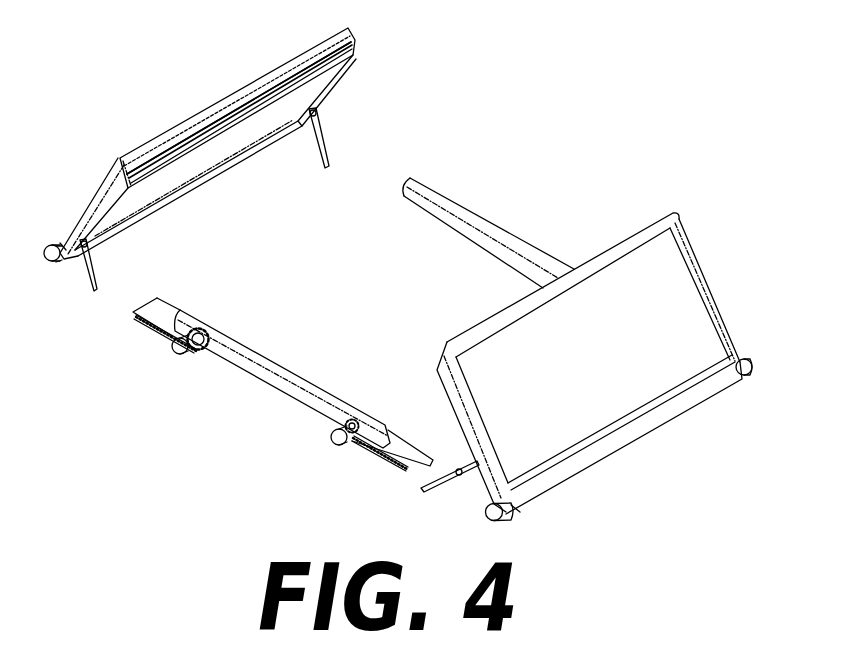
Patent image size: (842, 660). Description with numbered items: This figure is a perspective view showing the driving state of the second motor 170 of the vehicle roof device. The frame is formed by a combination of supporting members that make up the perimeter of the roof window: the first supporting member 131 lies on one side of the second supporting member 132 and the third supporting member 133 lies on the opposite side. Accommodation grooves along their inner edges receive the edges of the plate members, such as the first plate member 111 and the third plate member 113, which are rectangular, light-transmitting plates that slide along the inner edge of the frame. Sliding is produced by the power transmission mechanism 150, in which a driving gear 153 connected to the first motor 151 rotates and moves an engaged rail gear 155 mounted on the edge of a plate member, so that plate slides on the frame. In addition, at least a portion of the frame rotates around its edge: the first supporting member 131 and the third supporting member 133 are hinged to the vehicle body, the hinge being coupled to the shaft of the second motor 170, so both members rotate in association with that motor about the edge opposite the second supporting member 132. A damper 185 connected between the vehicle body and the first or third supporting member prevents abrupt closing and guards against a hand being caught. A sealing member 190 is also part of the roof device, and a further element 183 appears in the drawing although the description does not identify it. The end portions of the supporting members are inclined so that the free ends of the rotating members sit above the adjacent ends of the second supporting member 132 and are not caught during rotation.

The first plate member 111 is at (352, 50).
The third plate member 113 is at (677, 264).
The first supporting member 131 is at (101, 183).
The second supporting member 132 is at (480, 217).
The third supporting member 133 is at (633, 437).
The power transmission mechanism 150 is at (248, 384).
The first motor 151 is at (175, 350).
The driving gear 153 is at (262, 381).
The rail gear 155 is at (137, 318).
The second motor 170 is at (47, 266).
The hinge joint 183 is at (58, 241).
The damper 185 is at (97, 274).
The sealing member 190 is at (268, 74).